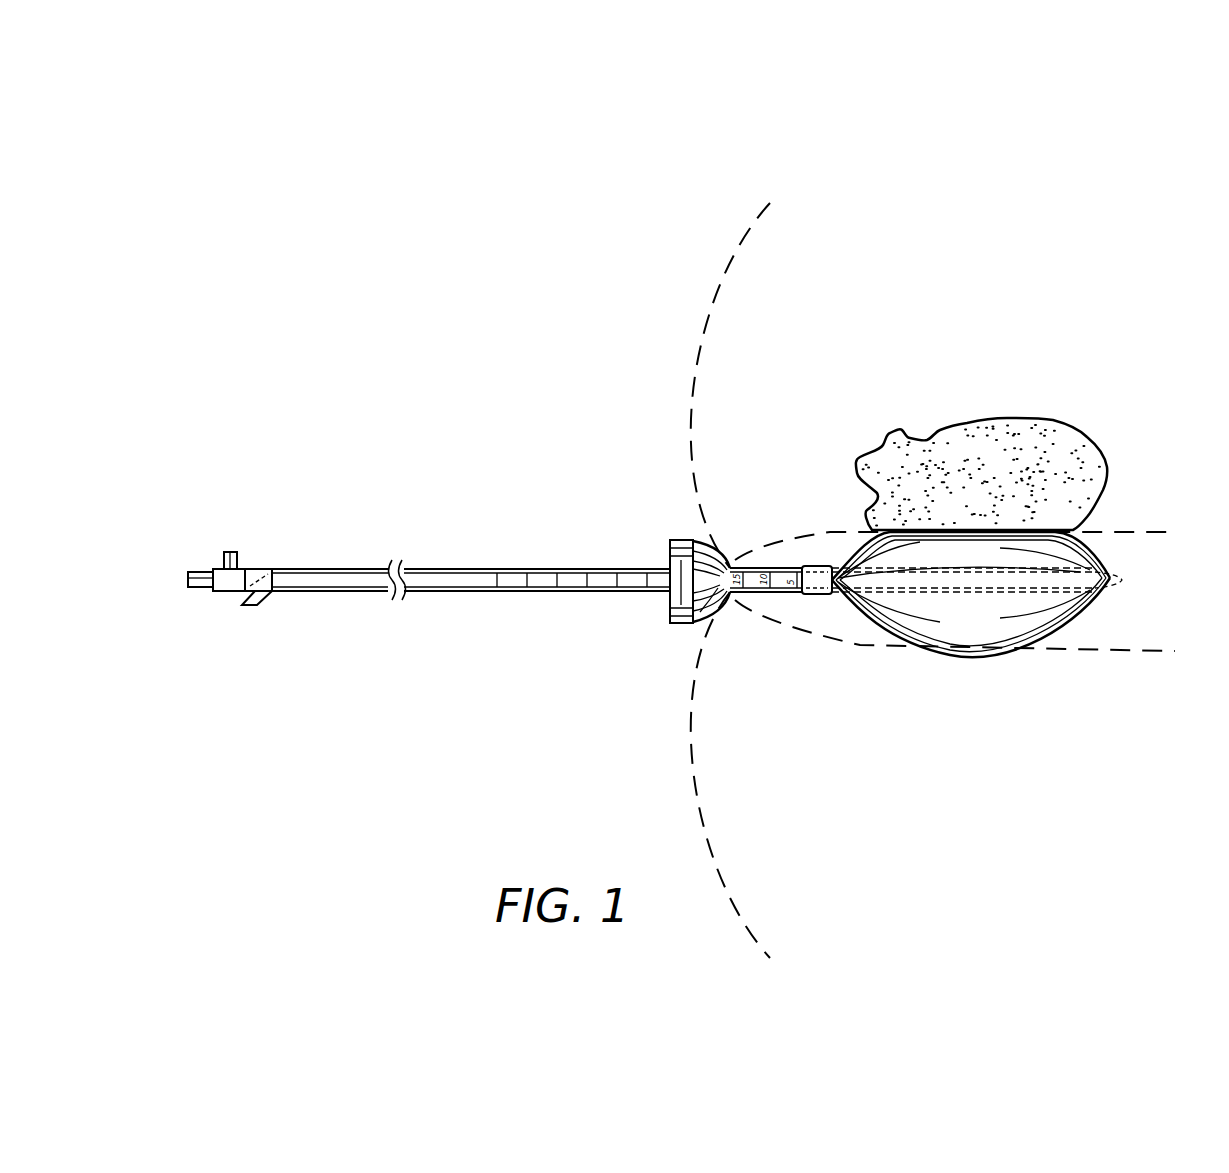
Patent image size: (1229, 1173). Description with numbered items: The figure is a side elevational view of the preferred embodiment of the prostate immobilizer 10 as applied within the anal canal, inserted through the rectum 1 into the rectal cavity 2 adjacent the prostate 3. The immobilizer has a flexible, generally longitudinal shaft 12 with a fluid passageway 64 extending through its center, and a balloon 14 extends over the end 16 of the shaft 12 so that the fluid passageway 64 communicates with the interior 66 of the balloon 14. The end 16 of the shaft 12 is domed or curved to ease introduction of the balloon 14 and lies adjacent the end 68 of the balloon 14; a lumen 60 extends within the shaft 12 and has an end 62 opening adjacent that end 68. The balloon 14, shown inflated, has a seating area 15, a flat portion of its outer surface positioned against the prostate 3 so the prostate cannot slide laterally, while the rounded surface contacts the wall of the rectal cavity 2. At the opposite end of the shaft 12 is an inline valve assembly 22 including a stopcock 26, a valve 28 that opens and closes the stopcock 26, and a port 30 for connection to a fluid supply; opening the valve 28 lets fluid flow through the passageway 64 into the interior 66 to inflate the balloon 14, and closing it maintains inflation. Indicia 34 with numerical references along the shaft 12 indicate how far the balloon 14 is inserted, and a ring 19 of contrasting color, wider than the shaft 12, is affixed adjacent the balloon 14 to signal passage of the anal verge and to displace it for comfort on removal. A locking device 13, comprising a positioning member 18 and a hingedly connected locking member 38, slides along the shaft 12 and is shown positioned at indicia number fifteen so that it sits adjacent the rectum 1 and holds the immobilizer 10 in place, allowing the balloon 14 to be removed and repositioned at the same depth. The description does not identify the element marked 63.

The rectum 1 is at (722, 553).
The rectal cavity 2 is at (850, 628).
The prostate 3 is at (995, 432).
The prostate immobilizer 10 is at (480, 520).
The shaft 12 is at (471, 586).
The locking device 13 is at (700, 540).
The balloon 14 is at (989, 593).
The seating area 15 is at (958, 532).
The end of the shaft 16 is at (1075, 598).
The positioning member 18 is at (705, 614).
The ring 19 is at (818, 596).
The valve assembly 22 is at (240, 555).
The stopcock 26 is at (228, 592).
The valve 28 is at (228, 566).
The port 30 is at (198, 588).
The indicia 34 is at (658, 570).
The locking member 38 is at (680, 598).
The lumen 60 is at (480, 591).
The end of the lumen 62 is at (1118, 578).
The outer shaft wall 63 is at (320, 591).
The fluid passageway 64 is at (430, 592).
The interior of the balloon 66 is at (962, 648).
The end of the balloon 68 is at (1042, 640).